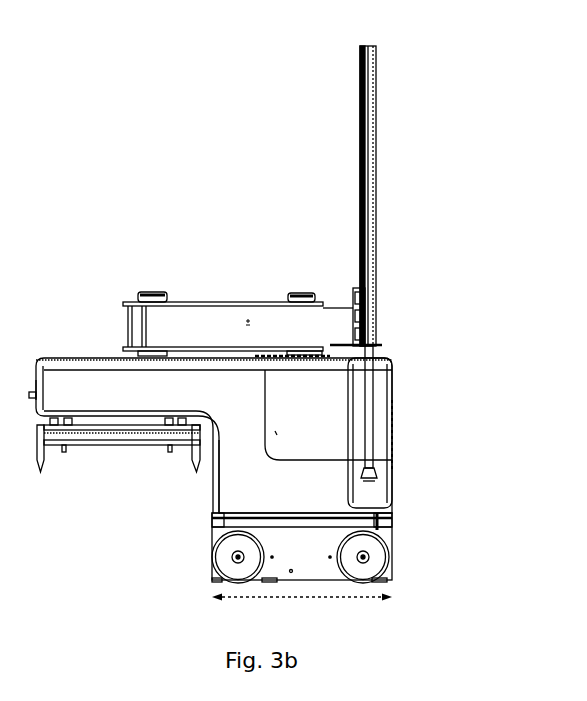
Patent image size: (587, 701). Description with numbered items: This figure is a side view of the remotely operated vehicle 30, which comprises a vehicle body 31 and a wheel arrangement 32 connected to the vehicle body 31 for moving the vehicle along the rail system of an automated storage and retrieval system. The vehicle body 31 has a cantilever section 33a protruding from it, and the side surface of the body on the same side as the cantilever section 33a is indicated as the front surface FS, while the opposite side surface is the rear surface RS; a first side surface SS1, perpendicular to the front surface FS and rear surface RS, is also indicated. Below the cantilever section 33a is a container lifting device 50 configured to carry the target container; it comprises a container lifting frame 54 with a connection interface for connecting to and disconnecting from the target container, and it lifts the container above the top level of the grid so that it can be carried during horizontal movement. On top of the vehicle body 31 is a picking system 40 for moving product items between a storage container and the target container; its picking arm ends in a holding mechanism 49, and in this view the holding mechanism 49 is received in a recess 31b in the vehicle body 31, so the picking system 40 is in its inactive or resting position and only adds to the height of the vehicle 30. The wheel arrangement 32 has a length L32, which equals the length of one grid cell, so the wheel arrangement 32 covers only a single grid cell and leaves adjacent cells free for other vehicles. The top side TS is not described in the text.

The remotely operated vehicle 30 is at (126, 176).
The vehicle body 31 is at (300, 478).
The recess 31b is at (377, 420).
The wheel arrangement 32 is at (175, 556).
The cantilever section 33a is at (125, 410).
The picking system 40 is at (400, 316).
The holding mechanism 49 is at (378, 473).
The container lifting device 50 is at (59, 588).
The container lifting frame 54 is at (129, 439).
The top side TS is at (107, 355).
The rear surface RS is at (402, 389).
The front surface FS is at (199, 481).
The first side surface SS1 is at (326, 408).
The length L32 is at (302, 610).